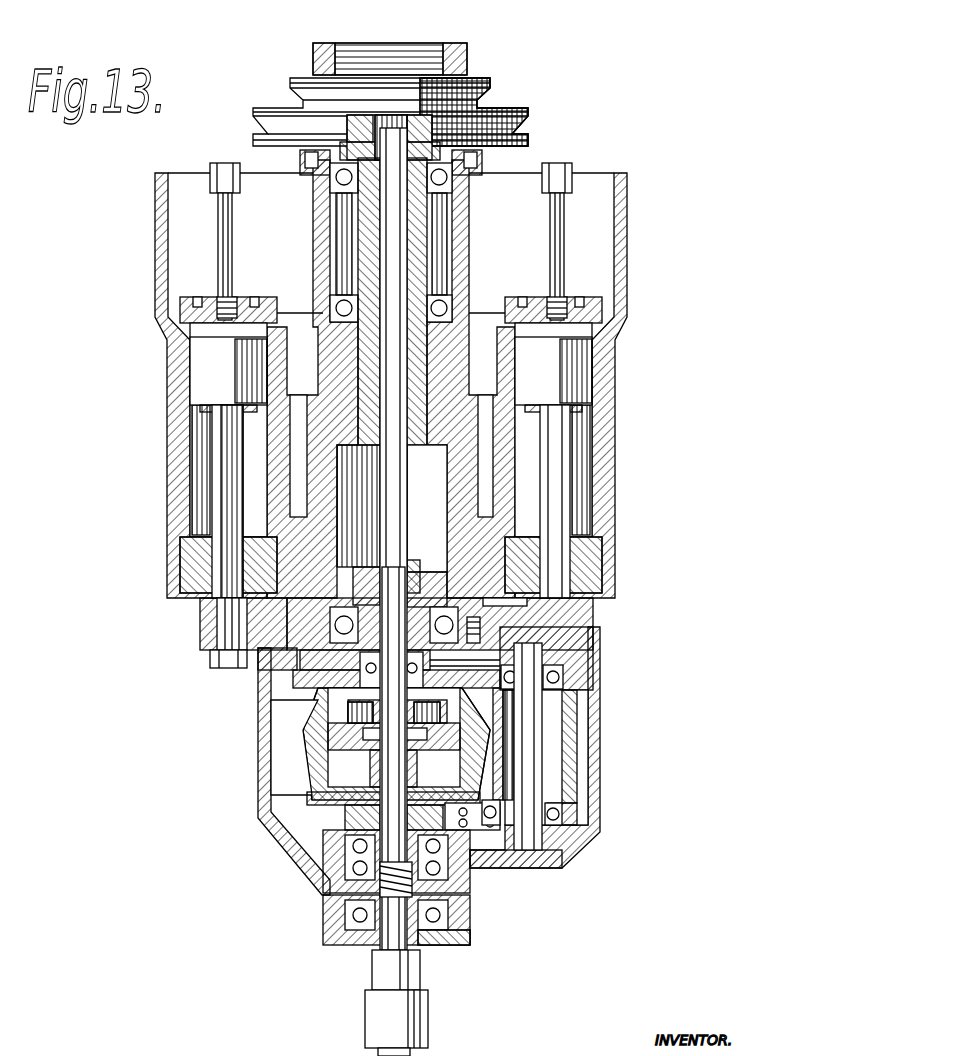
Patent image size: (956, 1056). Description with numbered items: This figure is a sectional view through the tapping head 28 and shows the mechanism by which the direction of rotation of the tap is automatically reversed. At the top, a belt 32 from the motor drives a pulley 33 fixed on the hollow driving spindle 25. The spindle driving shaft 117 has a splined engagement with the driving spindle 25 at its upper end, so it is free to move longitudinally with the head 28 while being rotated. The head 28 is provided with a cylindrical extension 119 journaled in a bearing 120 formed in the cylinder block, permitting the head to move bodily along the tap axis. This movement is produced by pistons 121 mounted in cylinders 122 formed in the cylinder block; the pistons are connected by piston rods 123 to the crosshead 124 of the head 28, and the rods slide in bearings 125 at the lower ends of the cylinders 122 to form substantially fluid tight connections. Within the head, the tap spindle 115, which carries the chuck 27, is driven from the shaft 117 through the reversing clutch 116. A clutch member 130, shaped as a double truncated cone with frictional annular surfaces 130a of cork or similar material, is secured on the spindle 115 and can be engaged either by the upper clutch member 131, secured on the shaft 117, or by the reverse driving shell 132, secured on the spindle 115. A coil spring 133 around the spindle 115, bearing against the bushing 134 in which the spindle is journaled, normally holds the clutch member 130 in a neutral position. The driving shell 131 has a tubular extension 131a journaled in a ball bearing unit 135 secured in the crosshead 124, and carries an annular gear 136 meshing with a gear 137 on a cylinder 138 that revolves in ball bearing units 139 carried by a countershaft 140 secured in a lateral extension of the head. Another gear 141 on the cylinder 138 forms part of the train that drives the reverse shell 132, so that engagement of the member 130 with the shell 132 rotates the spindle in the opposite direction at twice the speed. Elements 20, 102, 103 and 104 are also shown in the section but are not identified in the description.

The housing 20 is at (166, 455).
The driving spindle 25 is at (485, 152).
The chuck 27 is at (374, 1010).
The tapping head 28 is at (263, 740).
The belt 32 is at (336, 57).
The pulley 33 is at (304, 100).
The clutch member 102 is at (460, 778).
The bracket 103 is at (494, 868).
The bearing block 104 is at (330, 842).
The tap spindle 115 is at (386, 936).
The reversing clutch 116 is at (290, 751).
The spindle driving shaft 117 is at (396, 493).
The cylindrical extension 119 is at (416, 436).
The bearing 120 is at (345, 382).
The pistons 121 is at (214, 360).
The cylinders 122 is at (196, 480).
The piston rods 123 is at (224, 505).
The crosshead 124 is at (206, 626).
The bearings 125 is at (196, 560).
The clutch member 130 is at (331, 773).
The annular surfaces 130a is at (305, 698).
The upper clutch member 131 is at (305, 720).
The tubular extension 131a is at (409, 546).
The reverse driving shell 132 is at (340, 812).
The coil spring 133 is at (341, 912).
The bushing 134 is at (428, 945).
The ball bearing unit 135 is at (442, 610).
The annular gear 136 is at (298, 676).
The gear 137 is at (575, 667).
The cylinder 138 is at (576, 720).
The ball bearing units 139 is at (560, 680).
The countershaft 140 is at (540, 752).
The gear 141 is at (578, 812).